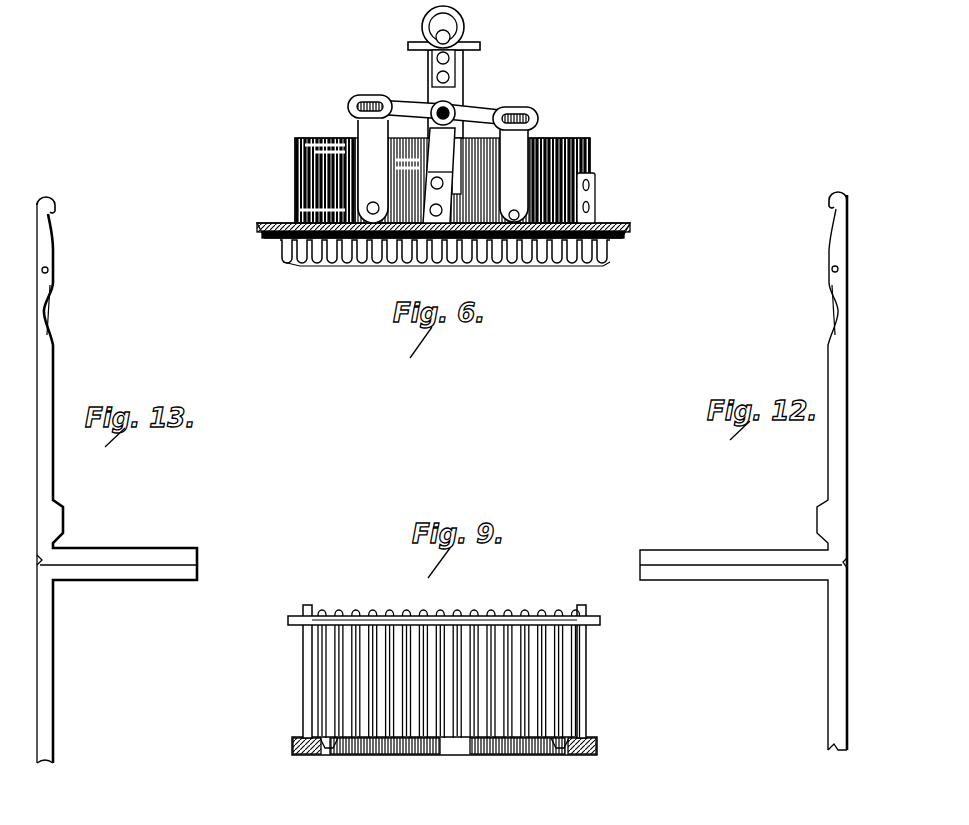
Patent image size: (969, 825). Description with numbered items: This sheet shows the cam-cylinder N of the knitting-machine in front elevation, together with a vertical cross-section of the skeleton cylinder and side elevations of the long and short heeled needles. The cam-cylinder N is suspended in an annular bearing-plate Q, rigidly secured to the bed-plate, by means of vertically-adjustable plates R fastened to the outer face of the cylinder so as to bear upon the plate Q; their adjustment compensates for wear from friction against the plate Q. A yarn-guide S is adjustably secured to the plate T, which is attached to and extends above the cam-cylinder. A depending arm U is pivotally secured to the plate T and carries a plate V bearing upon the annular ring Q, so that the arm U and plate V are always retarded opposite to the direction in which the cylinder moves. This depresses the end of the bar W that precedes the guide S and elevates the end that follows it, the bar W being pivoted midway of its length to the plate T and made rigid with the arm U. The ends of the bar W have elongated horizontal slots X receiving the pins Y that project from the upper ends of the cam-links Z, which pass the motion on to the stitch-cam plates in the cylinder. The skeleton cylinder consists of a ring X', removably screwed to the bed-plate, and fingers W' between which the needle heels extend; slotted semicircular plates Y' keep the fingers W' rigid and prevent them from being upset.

In FIG. 6, the yarn-guide S is at (433, 27).
In FIG. 6, the plate T is at (462, 80).
In FIG. 6, the bar W is at (429, 105).
In FIG. 6, the elongated horizontal slots X is at (443, 102).
In FIG. 6, the pins Y is at (439, 107).
In FIG. 6, the cam-links Z is at (443, 171).
In FIG. 6, the depending arm U is at (439, 175).
In FIG. 6, the plate V is at (432, 198).
In FIG. 6, the cam-cylinder N is at (590, 155).
In FIG. 6, the vertically-adjustable plates R is at (595, 193).
In FIG. 6, the annular bearing-plate Q is at (258, 228).
In FIG. 9, the slotted semicircular plates Y' is at (436, 614).
In FIG. 9, the fingers W' is at (449, 671).
In FIG. 9, the ring X' is at (444, 756).